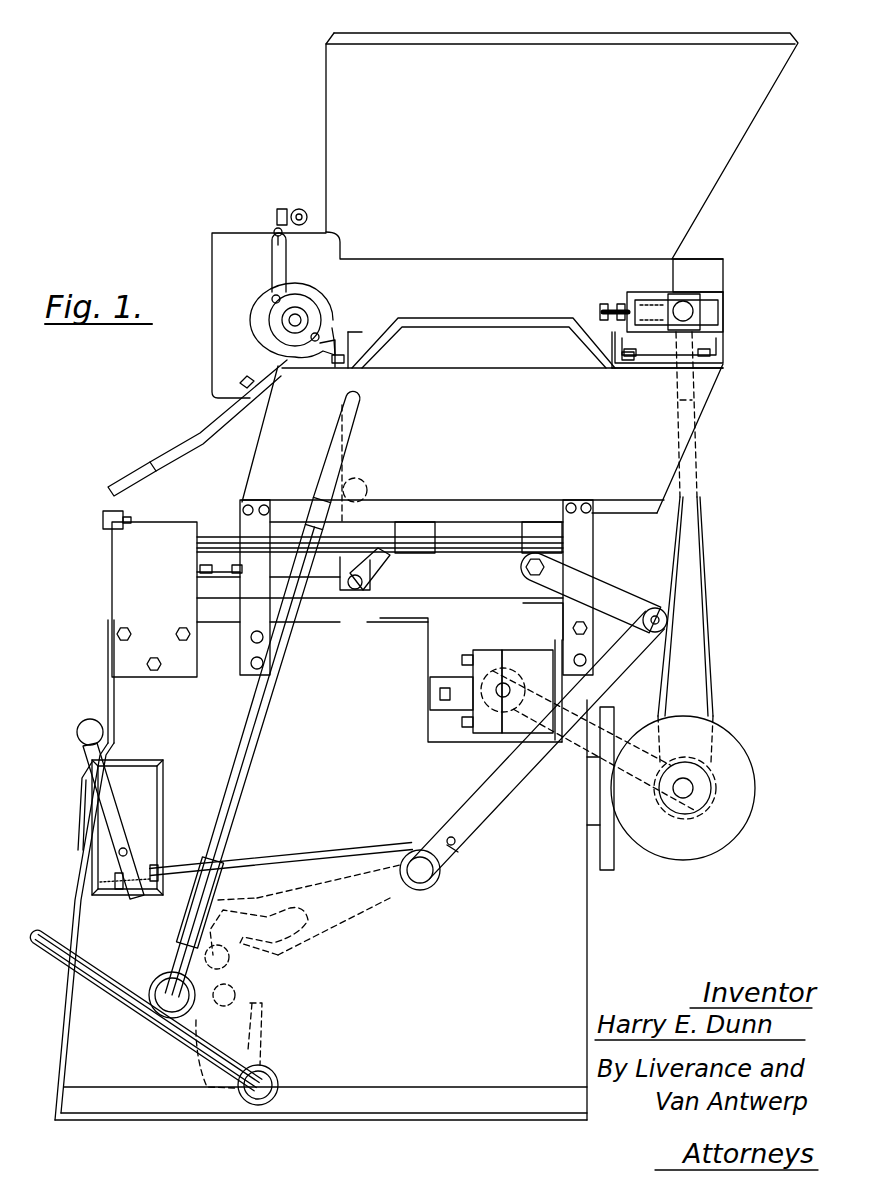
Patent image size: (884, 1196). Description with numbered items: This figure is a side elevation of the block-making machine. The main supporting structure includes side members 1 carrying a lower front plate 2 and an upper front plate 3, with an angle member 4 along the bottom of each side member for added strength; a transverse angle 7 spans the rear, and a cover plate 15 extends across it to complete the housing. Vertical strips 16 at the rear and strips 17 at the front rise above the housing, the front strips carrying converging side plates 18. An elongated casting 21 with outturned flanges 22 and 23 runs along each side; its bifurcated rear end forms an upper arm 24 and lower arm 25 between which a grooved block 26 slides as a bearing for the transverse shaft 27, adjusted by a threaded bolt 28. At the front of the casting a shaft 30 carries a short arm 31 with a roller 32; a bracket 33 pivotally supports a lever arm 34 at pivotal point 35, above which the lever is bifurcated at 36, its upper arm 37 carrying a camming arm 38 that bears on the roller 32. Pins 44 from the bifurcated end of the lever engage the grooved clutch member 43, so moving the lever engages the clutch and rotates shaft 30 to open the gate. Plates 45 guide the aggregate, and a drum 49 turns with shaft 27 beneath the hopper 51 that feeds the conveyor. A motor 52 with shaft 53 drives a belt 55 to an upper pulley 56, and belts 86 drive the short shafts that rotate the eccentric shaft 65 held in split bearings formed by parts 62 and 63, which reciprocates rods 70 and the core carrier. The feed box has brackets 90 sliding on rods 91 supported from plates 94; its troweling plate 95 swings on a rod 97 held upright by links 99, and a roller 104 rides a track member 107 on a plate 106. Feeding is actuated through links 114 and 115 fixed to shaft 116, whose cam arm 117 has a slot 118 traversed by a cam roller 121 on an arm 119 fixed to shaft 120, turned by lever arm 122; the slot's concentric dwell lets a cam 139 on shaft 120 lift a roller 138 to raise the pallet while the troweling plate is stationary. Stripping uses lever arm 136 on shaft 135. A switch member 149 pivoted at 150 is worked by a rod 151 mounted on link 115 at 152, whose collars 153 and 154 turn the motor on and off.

The side members 1 is at (590, 945).
The lower front plate 2 is at (60, 1050).
The upper front plate 3 is at (78, 822).
The angle member 4 is at (420, 1102).
The angle 7 is at (560, 615).
The cover plate 15 is at (490, 600).
The supporting member or strip 16 is at (593, 553).
The strip 17 is at (250, 655).
The side plates 18 is at (650, 492).
The elongated casting 21 is at (518, 272).
The outturned flange 22 is at (333, 374).
The outturned flange 23 is at (650, 370).
The upper arm 24 is at (718, 275).
The lower arm 25 is at (724, 348).
The block 26 is at (702, 315).
The transversely extending shaft 27 is at (686, 300).
The threaded bolt 28 is at (606, 303).
The shaft 30 is at (307, 214).
The short arm 31 is at (278, 229).
The roller 32 is at (283, 209).
The supporting bracket 33 is at (265, 408).
The lever arm 34 is at (196, 432).
The pivotal point 35 is at (240, 382).
The bifurcation 36 is at (255, 335).
The upper arm 37 is at (272, 254).
The camming arm 38 is at (275, 230).
The clutch member 43 is at (272, 320).
The pins 44 is at (281, 300).
The plates 45 is at (232, 243).
The drum 49 is at (710, 300).
The hopper 51 is at (345, 66).
The motor 52 is at (738, 828).
The shaft 53 is at (683, 798).
The belt 55 is at (708, 638).
The upper pulley 56 is at (697, 385).
The bearing part 62 is at (535, 668).
The bearing part 63 is at (485, 650).
The eccentric shaft 65 is at (500, 694).
The rods 70 is at (432, 690).
The belts 86 is at (572, 750).
The brackets 90 is at (540, 522).
The rods 91 is at (470, 532).
The plates 94 is at (125, 592).
The troweling plate 95 is at (340, 433).
The rod 97 is at (352, 590).
The links 99 is at (372, 558).
The roller 104 is at (364, 482).
The plate 106 is at (217, 577).
The track member 107 is at (218, 567).
The link 114 is at (625, 600).
The link 115 is at (510, 798).
The horizontal shaft 116 is at (422, 848).
The cam arm 117 is at (372, 912).
The slot 118 is at (258, 935).
The arm 119 is at (262, 1022).
The horizontal shaft 120 is at (262, 1082).
The cam roller 121 is at (197, 905).
The lever arm 122 is at (100, 1003).
The horizontal shaft 135 is at (168, 990).
The lever arm 136 is at (262, 740).
The roller 138 is at (245, 995).
The cam 139 is at (200, 1076).
The switch member 149 is at (108, 805).
The pivot 150 is at (118, 853).
The elongated rod 151 is at (335, 845).
The mounting point 152 is at (442, 872).
The collar 153 is at (158, 868).
The collar 154 is at (119, 890).